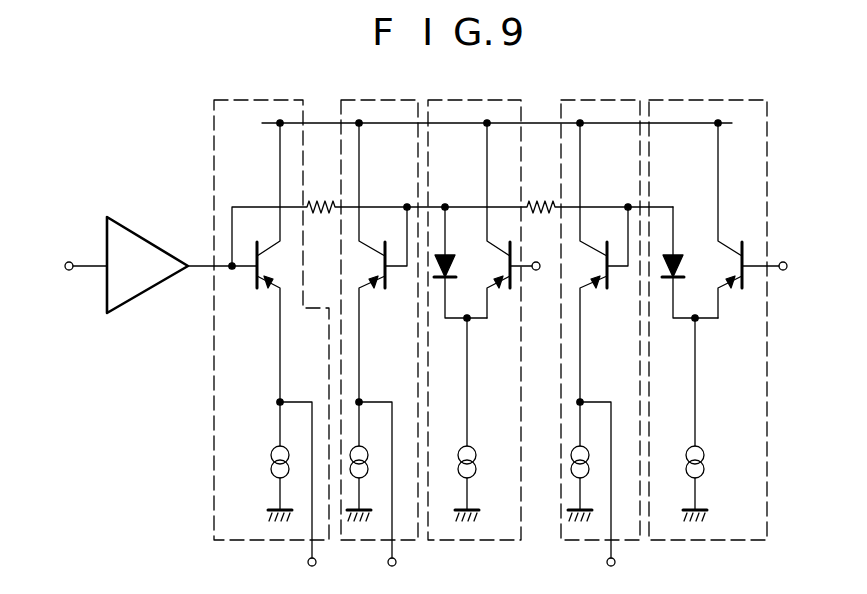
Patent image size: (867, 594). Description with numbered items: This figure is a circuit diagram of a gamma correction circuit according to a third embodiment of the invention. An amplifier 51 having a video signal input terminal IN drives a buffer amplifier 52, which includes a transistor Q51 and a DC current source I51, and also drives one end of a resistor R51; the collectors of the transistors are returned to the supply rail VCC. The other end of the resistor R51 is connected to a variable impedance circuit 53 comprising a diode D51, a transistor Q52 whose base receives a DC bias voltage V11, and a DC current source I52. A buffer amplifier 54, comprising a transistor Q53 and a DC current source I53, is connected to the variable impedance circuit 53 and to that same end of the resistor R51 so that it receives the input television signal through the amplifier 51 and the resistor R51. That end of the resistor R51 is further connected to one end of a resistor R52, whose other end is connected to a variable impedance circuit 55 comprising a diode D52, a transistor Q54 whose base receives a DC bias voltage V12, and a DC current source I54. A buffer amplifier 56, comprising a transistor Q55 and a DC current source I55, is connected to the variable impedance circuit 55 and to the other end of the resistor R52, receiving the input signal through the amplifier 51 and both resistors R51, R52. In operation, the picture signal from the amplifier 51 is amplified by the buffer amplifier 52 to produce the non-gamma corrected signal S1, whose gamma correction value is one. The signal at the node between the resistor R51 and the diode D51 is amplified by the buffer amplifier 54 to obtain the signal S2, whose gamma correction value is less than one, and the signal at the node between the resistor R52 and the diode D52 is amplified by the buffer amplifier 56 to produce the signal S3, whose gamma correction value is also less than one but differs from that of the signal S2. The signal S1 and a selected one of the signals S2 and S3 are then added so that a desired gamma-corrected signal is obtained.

The amplifier 51 is at (160, 240).
The buffer amplifier 52 is at (258, 100).
The variable impedance circuit 53 is at (522, 80).
The buffer amplifier 54 is at (387, 100).
The variable impedance circuit 55 is at (740, 100).
The buffer amplifier 56 is at (625, 100).
The transistor Q51 is at (268, 284).
The transistor Q52 is at (505, 284).
The transistor Q53 is at (373, 286).
The transistor Q54 is at (734, 286).
The transistor Q55 is at (595, 286).
The resistor R51 is at (310, 204).
The resistor R52 is at (530, 204).
The diode D51 is at (460, 256).
The diode D52 is at (677, 256).
The DC current source I51 is at (271, 458).
The DC current source I52 is at (476, 458).
The DC current source I53 is at (365, 450).
The DC current source I54 is at (706, 458).
The DC current source I55 is at (589, 450).
The supply voltage terminal VCC is at (478, 125).
The video signal input terminal IN is at (83, 253).
The DC bias voltage V11 is at (539, 253).
The DC bias voltage V12 is at (788, 255).
The non-gamma corrected signal S1 is at (300, 495).
The signal S2 is at (380, 495).
The signal S3 is at (599, 495).